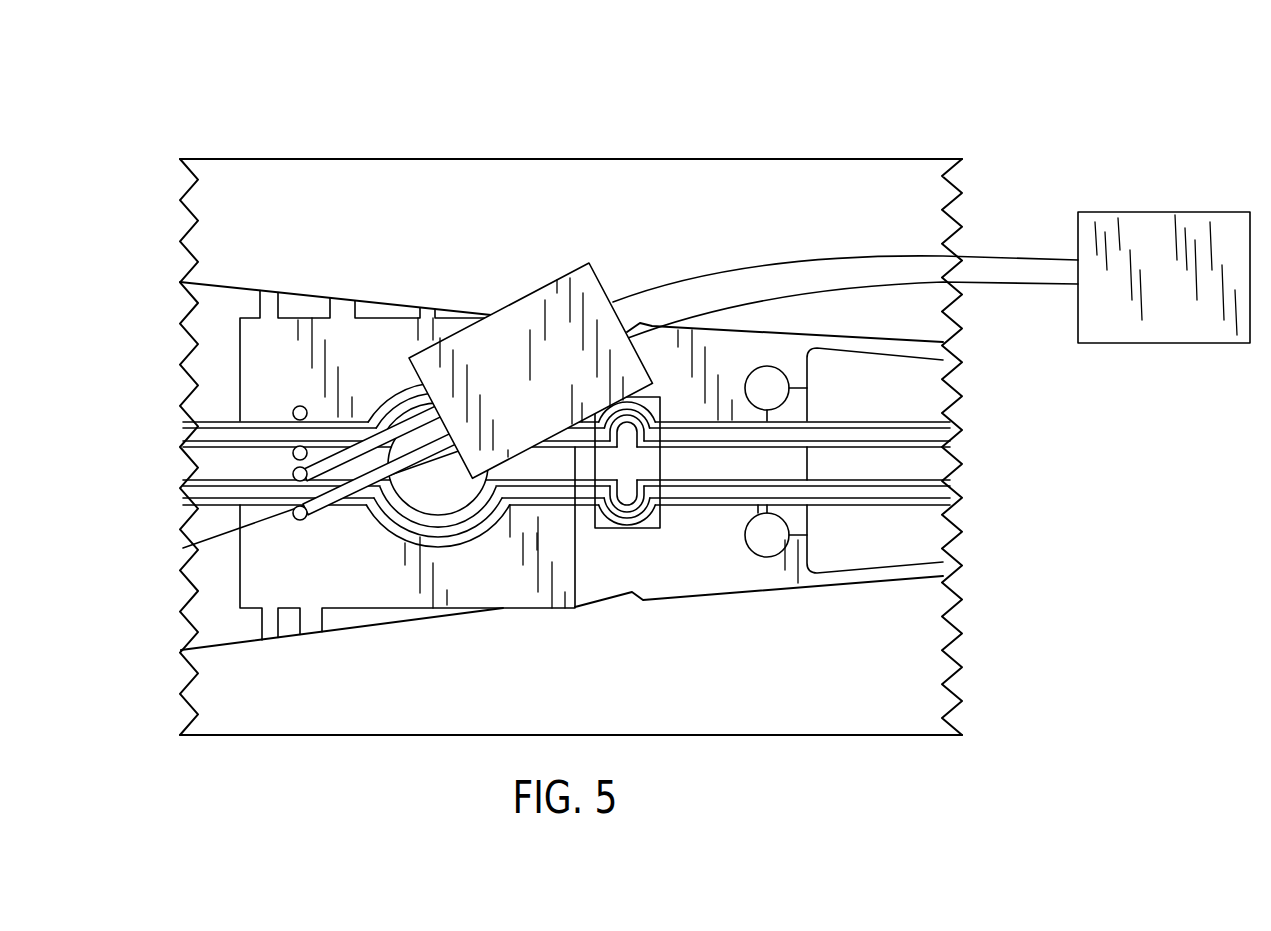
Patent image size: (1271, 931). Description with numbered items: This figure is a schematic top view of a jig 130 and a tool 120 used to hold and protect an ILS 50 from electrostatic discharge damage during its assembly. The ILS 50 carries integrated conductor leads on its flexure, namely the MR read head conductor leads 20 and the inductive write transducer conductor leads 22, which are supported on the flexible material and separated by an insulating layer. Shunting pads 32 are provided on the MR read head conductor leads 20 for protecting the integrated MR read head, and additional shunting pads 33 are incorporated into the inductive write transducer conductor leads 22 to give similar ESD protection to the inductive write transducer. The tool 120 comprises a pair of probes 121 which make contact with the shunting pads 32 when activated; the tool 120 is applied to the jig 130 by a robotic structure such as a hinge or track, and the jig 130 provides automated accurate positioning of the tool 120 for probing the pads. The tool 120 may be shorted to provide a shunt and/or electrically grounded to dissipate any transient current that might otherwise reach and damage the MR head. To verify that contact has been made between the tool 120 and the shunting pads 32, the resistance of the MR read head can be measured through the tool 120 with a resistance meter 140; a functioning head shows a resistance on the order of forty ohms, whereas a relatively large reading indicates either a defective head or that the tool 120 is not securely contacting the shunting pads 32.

The MR read head conductor leads 20 is at (176, 477).
The inductive write transducer conductor leads 22 is at (176, 413).
The shunting pads 32 is at (294, 516).
The shunting pads 33 is at (294, 450).
The ILS 50 is at (387, 272).
The tool 120 is at (538, 285).
The probes 121 is at (350, 492).
The jig 130 is at (860, 158).
The resistance meter 140 is at (1170, 212).